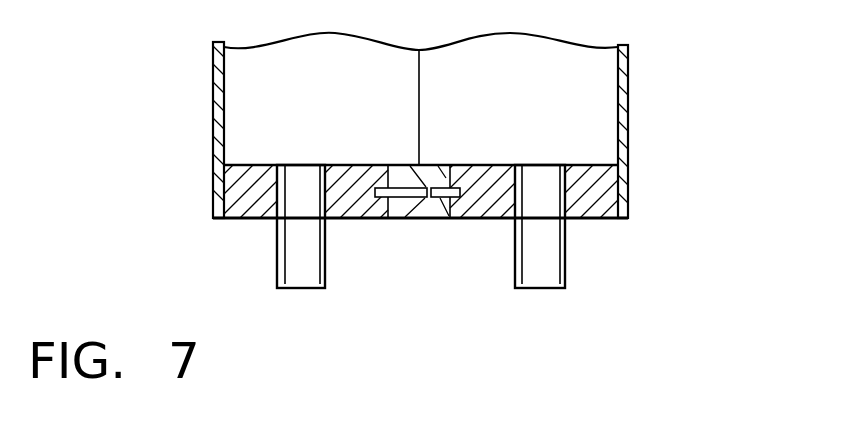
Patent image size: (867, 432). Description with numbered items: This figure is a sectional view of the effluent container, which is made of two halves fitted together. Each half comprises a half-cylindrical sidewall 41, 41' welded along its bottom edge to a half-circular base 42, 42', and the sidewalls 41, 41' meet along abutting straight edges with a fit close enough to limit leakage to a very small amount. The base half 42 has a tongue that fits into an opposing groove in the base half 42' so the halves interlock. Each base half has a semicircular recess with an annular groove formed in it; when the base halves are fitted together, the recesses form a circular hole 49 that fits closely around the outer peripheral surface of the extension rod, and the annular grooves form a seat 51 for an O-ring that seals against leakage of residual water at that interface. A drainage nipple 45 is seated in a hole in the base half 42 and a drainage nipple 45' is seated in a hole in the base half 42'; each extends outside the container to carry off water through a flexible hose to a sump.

The half-cylindrical sidewall 41 is at (172, 130).
The half-cylindrical sidewall 41' is at (665, 131).
The half-circular base 42 is at (279, 219).
The half-circular base 42' is at (556, 211).
The drainage nipple 45 is at (338, 239).
The drainage nipple 45' is at (583, 245).
The circular hole 49 is at (431, 228).
The seat 51 is at (394, 188).